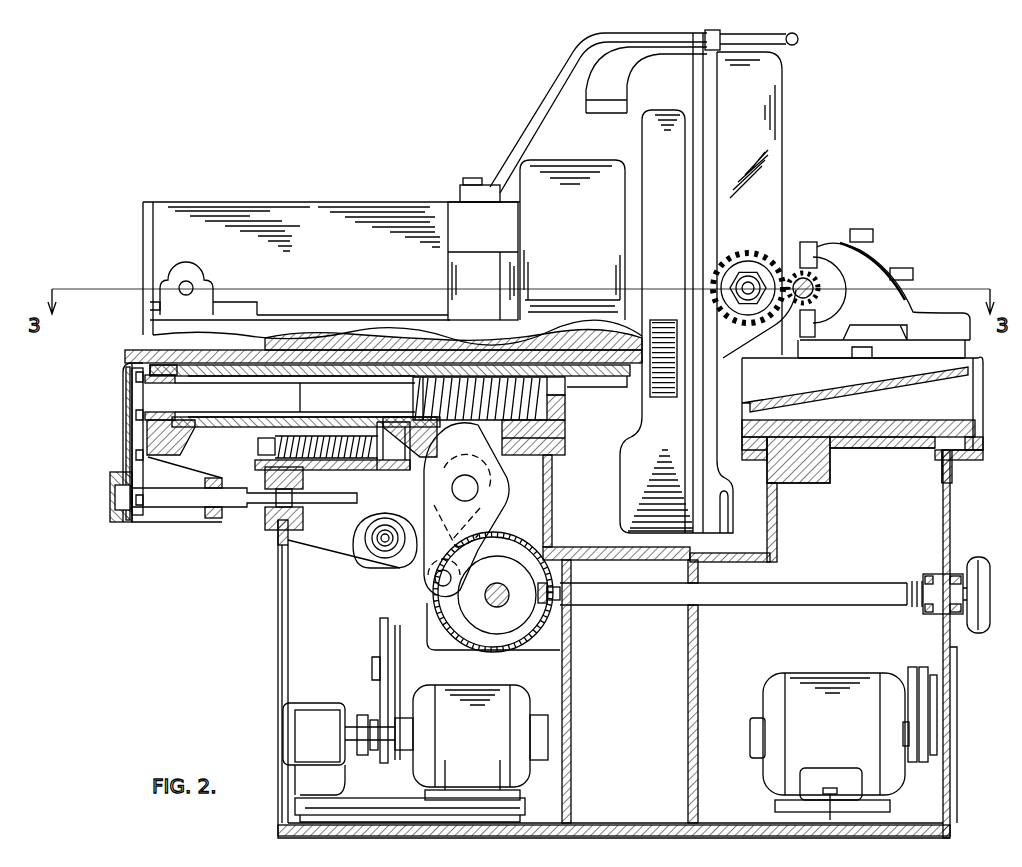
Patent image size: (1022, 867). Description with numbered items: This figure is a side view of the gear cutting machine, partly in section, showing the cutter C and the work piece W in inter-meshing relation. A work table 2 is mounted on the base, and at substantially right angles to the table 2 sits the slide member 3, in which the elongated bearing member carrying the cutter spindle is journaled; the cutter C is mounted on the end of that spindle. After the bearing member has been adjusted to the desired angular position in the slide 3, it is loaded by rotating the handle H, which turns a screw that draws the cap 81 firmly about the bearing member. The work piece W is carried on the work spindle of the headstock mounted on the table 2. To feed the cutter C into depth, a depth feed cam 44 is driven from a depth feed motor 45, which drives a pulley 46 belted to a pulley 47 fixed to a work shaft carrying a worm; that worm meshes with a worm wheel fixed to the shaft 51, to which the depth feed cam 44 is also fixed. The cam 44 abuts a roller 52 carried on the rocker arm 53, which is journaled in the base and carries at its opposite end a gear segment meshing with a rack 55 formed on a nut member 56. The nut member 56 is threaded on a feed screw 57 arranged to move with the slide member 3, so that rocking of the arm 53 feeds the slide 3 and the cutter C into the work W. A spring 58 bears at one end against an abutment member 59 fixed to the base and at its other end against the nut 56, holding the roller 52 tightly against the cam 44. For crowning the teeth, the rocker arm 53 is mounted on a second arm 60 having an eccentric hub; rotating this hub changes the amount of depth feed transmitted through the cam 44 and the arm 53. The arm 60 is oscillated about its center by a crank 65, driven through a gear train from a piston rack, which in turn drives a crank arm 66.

The slide member 3 is at (313, 212).
The cap 81 is at (460, 225).
The handle H is at (530, 122).
The cutter C is at (768, 254).
The work piece W is at (814, 272).
The work table 2 is at (985, 428).
The feed screw 57 is at (566, 400).
The abutment member 59 is at (566, 421).
The rack 55 is at (452, 423).
The spring 58 is at (513, 422).
The nut member 56 is at (403, 438).
The rocker arm 53 is at (505, 496).
The second arm 60 is at (483, 512).
The crank 65 is at (352, 560).
The crank arm 66 is at (418, 562).
The roller 52 is at (436, 587).
The pulley 47 is at (378, 622).
The shaft 51 is at (490, 607).
The depth feed cam 44 is at (508, 625).
The depth feed motor 45 is at (545, 737).
The pulley 46 is at (380, 763).